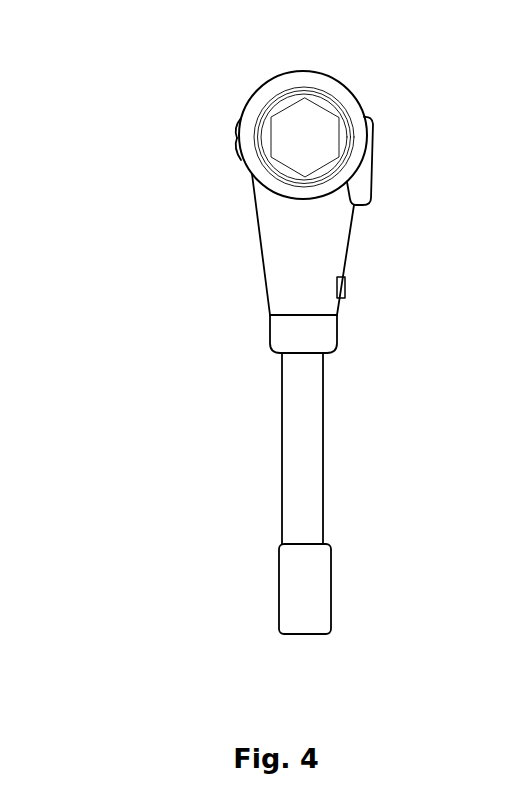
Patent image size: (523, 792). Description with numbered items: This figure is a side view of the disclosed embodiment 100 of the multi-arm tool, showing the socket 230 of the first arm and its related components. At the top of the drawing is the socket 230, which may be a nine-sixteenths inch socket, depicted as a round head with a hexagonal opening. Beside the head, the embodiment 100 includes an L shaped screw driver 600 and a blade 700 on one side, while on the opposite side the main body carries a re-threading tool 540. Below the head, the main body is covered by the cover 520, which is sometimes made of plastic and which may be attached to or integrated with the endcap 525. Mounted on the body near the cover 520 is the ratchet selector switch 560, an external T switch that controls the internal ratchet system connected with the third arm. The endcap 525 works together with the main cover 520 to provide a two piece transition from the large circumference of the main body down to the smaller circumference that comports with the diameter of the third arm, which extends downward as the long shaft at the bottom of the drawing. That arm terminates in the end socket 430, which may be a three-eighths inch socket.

The embodiment 100 is at (272, 353).
The socket 230 is at (275, 110).
The end socket 430 is at (312, 590).
The cover 520 is at (308, 280).
The end cap 525 is at (298, 338).
The re-threading tool 540 is at (378, 182).
The ratchet selector switch 560 is at (345, 287).
The L shaped screw driver 600 is at (235, 128).
The blade 700 is at (236, 143).